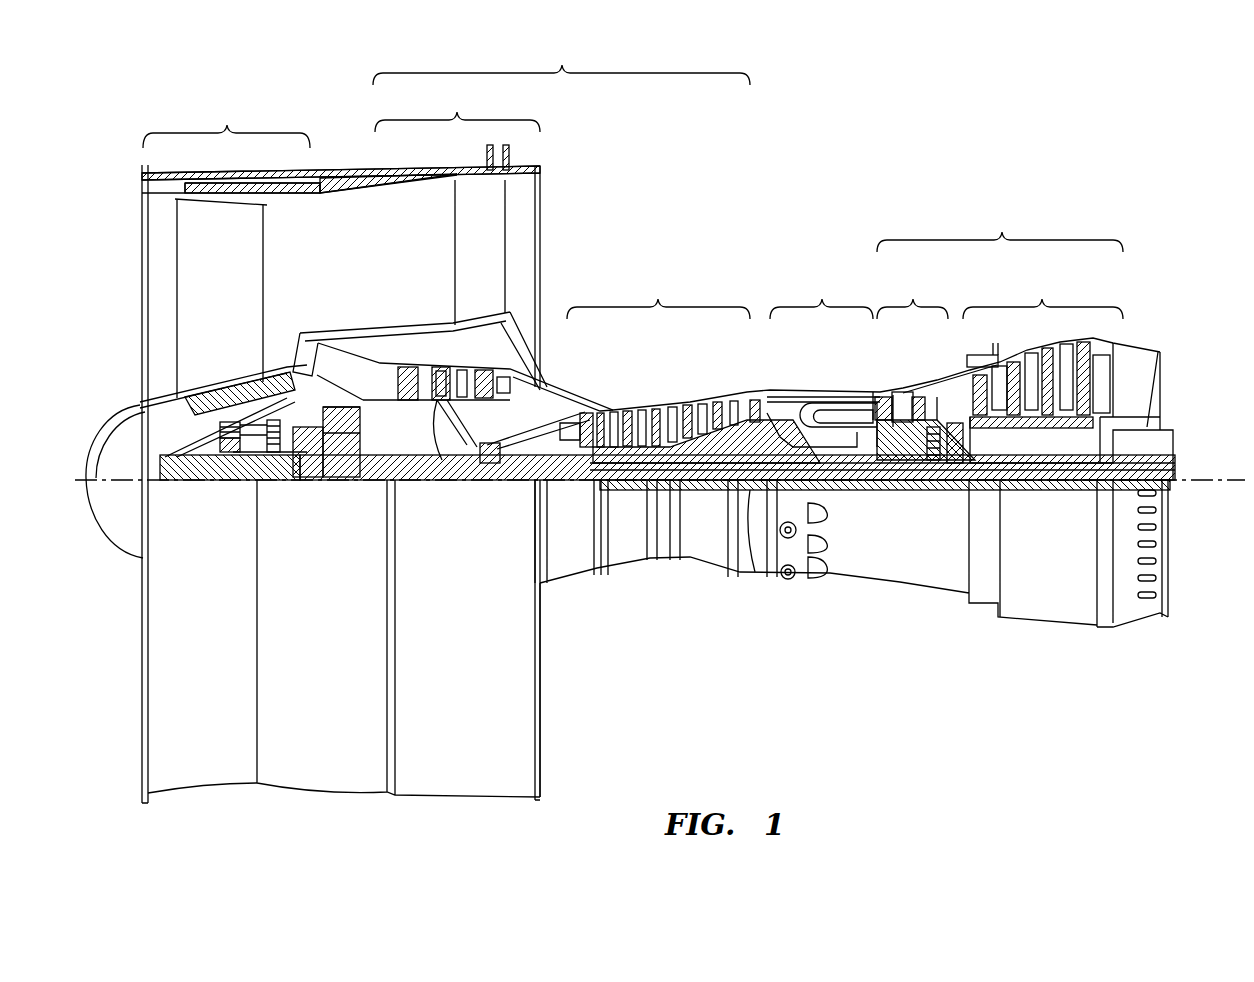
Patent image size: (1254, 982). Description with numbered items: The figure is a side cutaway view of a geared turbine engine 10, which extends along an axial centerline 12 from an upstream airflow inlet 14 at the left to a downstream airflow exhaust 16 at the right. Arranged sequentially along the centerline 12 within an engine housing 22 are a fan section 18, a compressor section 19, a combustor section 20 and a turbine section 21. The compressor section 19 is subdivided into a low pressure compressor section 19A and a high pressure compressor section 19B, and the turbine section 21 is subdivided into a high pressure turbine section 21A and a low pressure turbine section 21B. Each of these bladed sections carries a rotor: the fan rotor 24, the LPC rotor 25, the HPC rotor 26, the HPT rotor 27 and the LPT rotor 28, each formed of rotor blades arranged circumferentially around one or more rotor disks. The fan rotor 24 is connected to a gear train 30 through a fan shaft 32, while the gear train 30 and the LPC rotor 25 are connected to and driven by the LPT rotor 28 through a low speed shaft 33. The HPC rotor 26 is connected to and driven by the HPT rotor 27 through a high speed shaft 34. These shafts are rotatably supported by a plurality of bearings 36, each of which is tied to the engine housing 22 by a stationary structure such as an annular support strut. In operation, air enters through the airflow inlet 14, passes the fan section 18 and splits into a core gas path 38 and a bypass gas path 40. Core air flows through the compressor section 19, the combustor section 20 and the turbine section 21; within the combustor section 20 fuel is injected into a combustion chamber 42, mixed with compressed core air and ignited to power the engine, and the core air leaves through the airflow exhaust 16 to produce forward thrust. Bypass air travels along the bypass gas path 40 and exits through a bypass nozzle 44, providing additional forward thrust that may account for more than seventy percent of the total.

The geared turbine engine 10 is at (115, 152).
The axial centerline 12 is at (1224, 478).
The upstream airflow inlet 14 is at (142, 243).
The downstream airflow exhaust 16 is at (1165, 372).
The fan section 18 is at (226, 121).
The compressor section 19 is at (561, 60).
The low pressure compressor (LPC) section 19A is at (457, 240).
The high pressure compressor (HPC) section 19B is at (693, 367).
The combustor section 20 is at (821, 295).
The turbine section 21 is at (1000, 225).
The high pressure turbine (HPT) section 21A is at (924, 365).
The low pressure turbine (LPT) section 21B is at (1061, 367).
The engine housing 22 is at (566, 604).
The fan rotor 24 is at (146, 404).
The LPC rotor 25 is at (440, 487).
The HPC rotor 26 is at (727, 487).
The HPT rotor 27 is at (920, 487).
The LPT rotor 28 is at (1040, 437).
The gear train 30 is at (345, 487).
The fan shaft 32 is at (218, 487).
The low speed shaft 33 is at (762, 574).
The high speed shaft 34 is at (840, 487).
The bearings 36 is at (243, 487).
The core gas path 38 is at (560, 407).
The bypass gas path 40 is at (391, 261).
The combustion chamber 42 is at (835, 410).
The bypass nozzle 44 is at (540, 232).